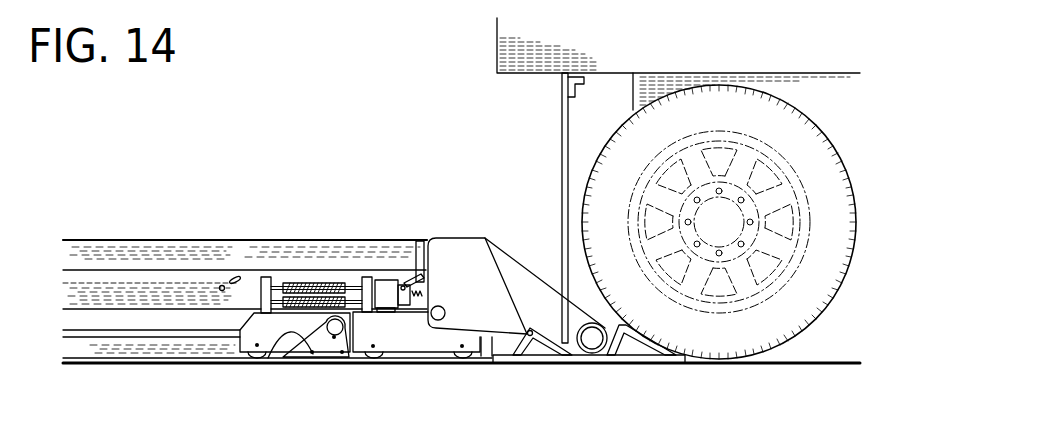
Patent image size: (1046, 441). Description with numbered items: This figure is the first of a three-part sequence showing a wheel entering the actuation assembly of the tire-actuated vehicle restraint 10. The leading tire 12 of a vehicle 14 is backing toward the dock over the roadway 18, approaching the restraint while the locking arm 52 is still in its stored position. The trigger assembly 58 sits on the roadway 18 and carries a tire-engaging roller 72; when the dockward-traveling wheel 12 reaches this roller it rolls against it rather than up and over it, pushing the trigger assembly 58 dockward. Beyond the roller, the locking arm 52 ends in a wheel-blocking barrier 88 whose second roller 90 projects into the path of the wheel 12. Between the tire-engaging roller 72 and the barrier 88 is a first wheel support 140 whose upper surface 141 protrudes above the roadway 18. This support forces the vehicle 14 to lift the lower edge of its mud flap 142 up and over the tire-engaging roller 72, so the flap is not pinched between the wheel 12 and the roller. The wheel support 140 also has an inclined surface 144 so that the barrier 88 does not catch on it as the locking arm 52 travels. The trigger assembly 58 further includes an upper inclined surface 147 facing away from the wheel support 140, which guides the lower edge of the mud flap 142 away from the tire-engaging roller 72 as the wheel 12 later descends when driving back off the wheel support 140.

The tire-actuated vehicle restraint 10 is at (168, 194).
The leading tire 12 is at (832, 146).
The vehicle 14 is at (497, 45).
The roadway 18 is at (810, 361).
The locking arm 52 is at (447, 237).
The trigger assembly 58 is at (348, 373).
The tire-engaging roller 72 is at (330, 327).
The wheel-blocking barrier 88 is at (592, 340).
The second roller 90 is at (604, 331).
The first wheel support 140 is at (525, 332).
The upper surface 141 is at (530, 332).
The mud flap 142 is at (561, 147).
The inclined surface 144 is at (530, 333).
The upper inclined surface 147 is at (270, 358).